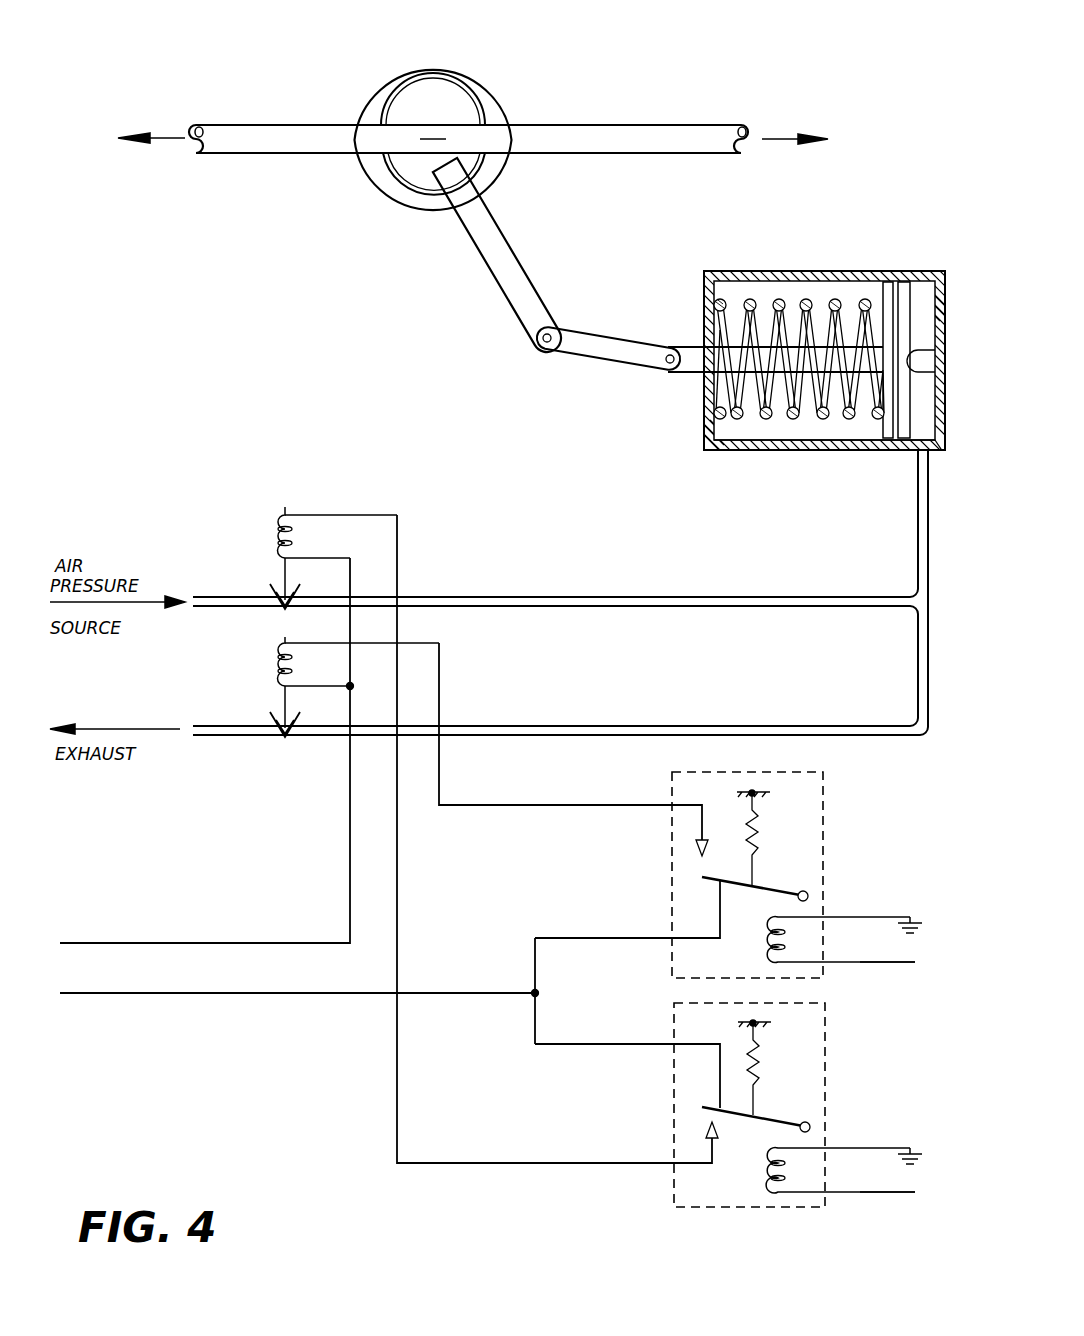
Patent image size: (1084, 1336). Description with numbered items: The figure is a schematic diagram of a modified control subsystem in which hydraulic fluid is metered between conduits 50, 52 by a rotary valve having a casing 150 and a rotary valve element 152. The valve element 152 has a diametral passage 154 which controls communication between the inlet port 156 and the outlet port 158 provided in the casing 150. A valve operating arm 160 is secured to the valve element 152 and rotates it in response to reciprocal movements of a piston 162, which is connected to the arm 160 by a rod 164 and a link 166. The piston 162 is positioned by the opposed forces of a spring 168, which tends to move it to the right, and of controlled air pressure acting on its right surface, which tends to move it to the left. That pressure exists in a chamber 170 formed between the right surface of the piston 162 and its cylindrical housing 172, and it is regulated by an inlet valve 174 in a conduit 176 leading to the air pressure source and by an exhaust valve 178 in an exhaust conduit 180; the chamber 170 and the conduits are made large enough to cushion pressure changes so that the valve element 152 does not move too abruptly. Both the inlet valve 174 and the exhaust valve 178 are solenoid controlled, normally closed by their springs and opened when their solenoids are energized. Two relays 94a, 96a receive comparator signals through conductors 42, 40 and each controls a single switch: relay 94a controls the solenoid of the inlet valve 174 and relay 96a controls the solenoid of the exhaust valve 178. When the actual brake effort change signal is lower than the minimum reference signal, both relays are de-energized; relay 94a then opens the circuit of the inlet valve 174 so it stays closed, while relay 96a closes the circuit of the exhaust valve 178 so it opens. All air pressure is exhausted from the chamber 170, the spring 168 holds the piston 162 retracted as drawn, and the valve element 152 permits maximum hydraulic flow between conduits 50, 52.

The conductor 40 is at (915, 962).
The conductor 42 is at (893, 1192).
The conduit 50 is at (270, 125).
The conduit 52 is at (707, 125).
The relay valve 94a is at (825, 1048).
The relay valve 96a is at (823, 790).
The casing 150 is at (440, 65).
The rotary valve element 152 is at (405, 170).
The diametral passage 154 is at (453, 140).
The inlet port 156 is at (367, 143).
The outlet port 158 is at (507, 133).
The valve operating arm 160 is at (503, 285).
The piston 162 is at (905, 292).
The rod 164 is at (695, 368).
The link 166 is at (600, 340).
The spring 168 is at (790, 415).
The chamber 170 is at (920, 295).
The cylindrical housing 172 is at (732, 450).
The inlet valve 174 is at (277, 613).
The conduit 176 is at (240, 597).
The exhaust valve 178 is at (282, 740).
The exhaust conduit 180 is at (239, 726).